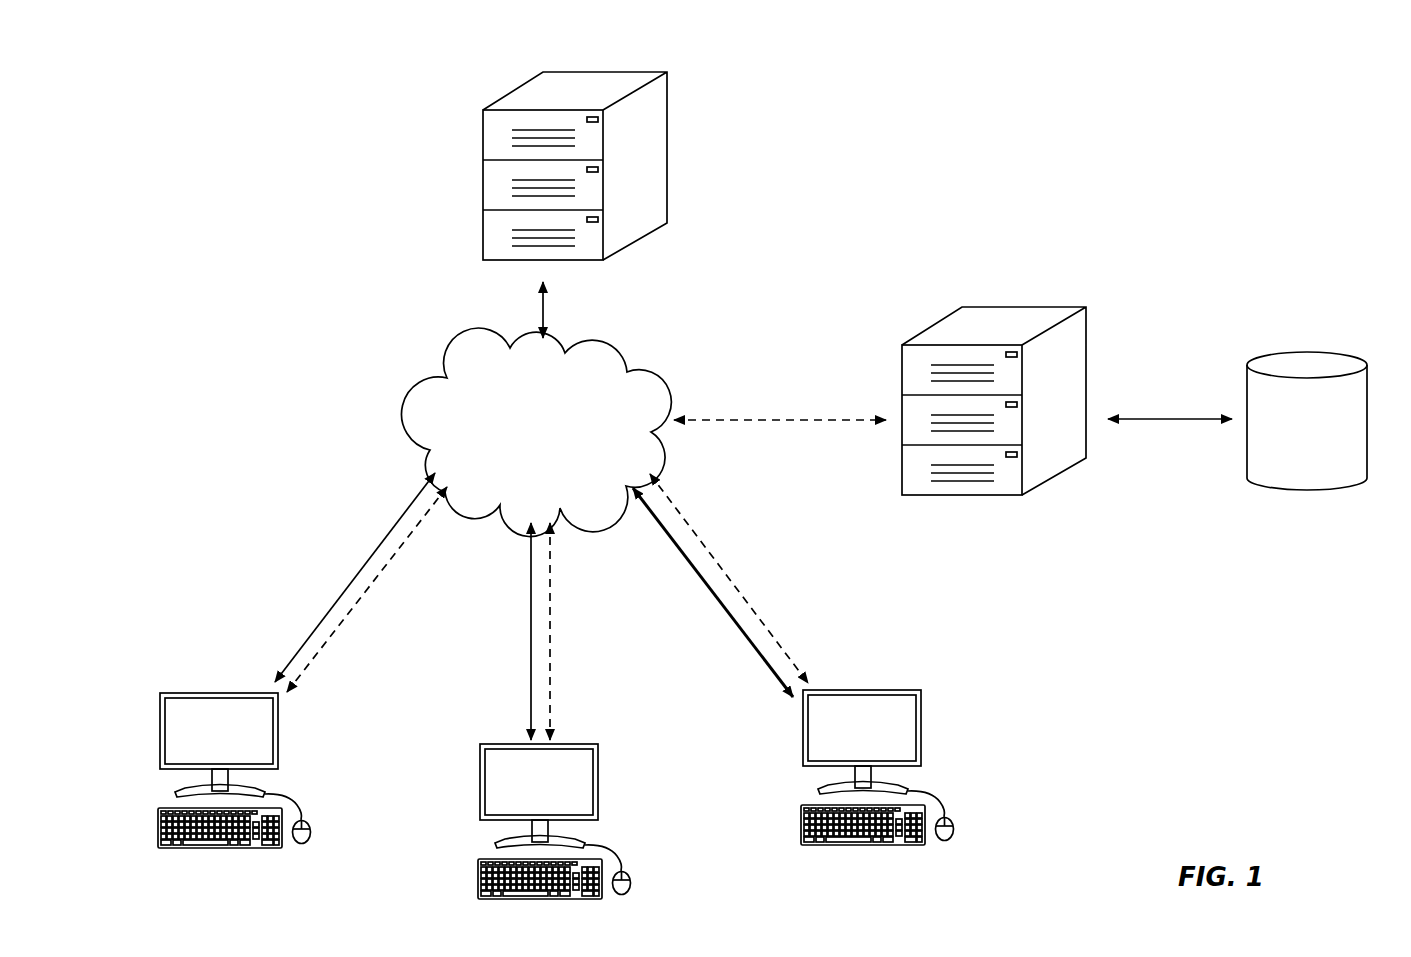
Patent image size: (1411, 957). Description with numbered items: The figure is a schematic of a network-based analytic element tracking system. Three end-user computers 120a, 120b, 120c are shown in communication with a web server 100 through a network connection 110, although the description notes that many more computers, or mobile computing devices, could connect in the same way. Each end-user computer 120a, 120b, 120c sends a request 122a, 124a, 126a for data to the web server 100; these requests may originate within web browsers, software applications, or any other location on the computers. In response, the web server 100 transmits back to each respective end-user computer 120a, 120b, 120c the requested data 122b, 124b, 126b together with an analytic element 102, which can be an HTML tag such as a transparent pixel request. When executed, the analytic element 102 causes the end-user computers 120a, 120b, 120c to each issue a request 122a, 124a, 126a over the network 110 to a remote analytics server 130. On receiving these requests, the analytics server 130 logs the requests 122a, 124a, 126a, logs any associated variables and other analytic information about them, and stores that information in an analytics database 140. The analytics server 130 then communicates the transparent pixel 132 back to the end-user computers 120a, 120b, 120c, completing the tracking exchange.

The web server 100 is at (583, 88).
The analytic element 102 is at (586, 316).
The network connection 110 is at (557, 447).
The end-user computer 120a is at (200, 852).
The end-user computer 120b is at (479, 803).
The end-user computer 120c is at (885, 850).
The request 122a is at (234, 640).
The requested data 122b is at (347, 686).
The request 124a is at (462, 698).
The requested data 124b is at (579, 698).
The request 126a is at (688, 686).
The requested data 126b is at (809, 636).
The analytics server 130 is at (1010, 318).
The transparent pixel 132 is at (810, 388).
The analytics database 140 is at (1337, 362).